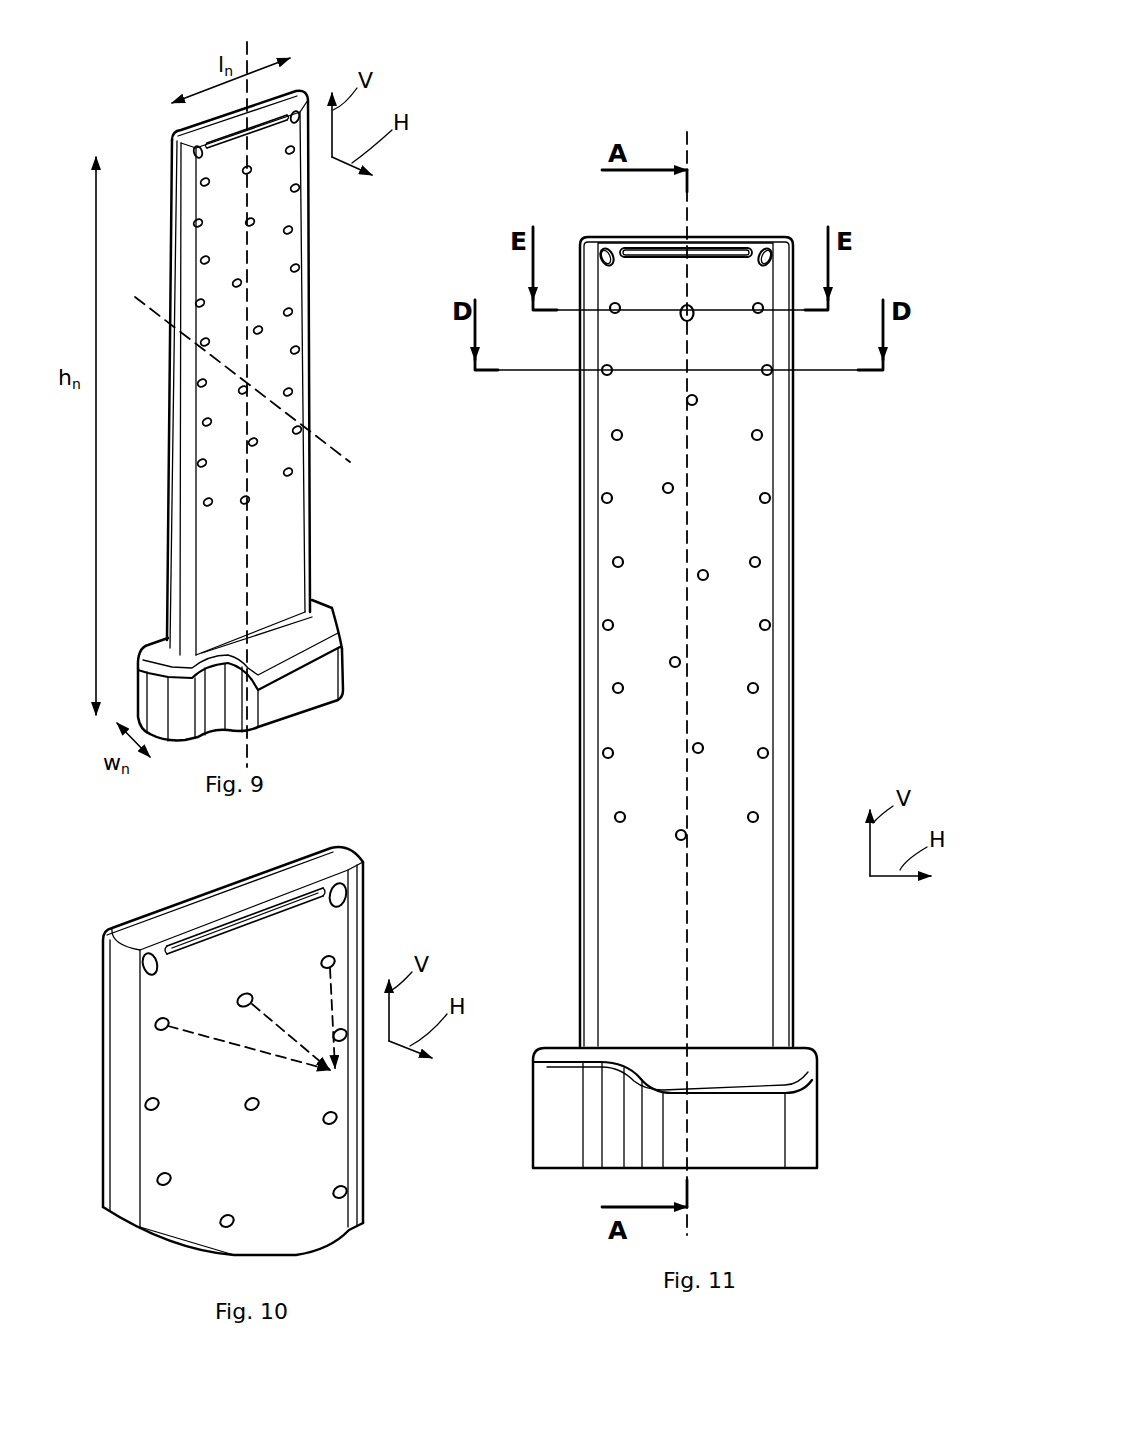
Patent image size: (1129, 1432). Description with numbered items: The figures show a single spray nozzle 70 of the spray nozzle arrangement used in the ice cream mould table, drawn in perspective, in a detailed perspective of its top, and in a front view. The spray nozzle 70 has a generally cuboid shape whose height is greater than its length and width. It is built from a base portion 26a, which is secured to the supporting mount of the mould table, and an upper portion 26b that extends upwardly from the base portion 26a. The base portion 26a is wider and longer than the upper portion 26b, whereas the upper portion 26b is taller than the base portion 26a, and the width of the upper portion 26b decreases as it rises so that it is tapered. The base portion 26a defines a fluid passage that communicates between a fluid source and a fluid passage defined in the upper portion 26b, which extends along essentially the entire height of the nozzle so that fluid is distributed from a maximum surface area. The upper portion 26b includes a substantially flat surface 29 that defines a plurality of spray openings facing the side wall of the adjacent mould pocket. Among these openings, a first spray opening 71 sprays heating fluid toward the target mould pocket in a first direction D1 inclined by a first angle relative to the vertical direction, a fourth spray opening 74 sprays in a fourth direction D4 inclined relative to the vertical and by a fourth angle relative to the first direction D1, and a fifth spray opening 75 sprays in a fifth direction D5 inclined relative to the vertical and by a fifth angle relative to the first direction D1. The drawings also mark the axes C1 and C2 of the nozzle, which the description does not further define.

In FIG. 9, the spray nozzle 70 is at (207, 410).
In FIG. 10, the spray nozzle 70 is at (231, 1084).
In FIG. 11, the spray nozzle 70 is at (682, 669).
In FIG. 9, the base portion 26a is at (293, 680).
In FIG. 11, the base portion 26a is at (770, 1111).
In FIG. 9, the upper portion 26b is at (173, 468).
In FIG. 10, the upper portion 26b is at (194, 1179).
In FIG. 11, the upper portion 26b is at (592, 472).
In FIG. 9, the surface 29 is at (207, 402).
In FIG. 10, the surface 29 is at (158, 997).
In FIG. 11, the surface 29 is at (608, 400).
In FIG. 10, the first spray opening 71 is at (240, 993).
In FIG. 10, the fourth spray opening 74 is at (156, 1028).
In FIG. 10, the fifth spray opening 75 is at (335, 957).
In FIG. 9, the first central axis C1 is at (248, 55).
In FIG. 11, the first central axis C1 is at (688, 155).
In FIG. 9, the second axis C2 is at (323, 440).
In FIG. 10, the first direction D1 is at (330, 1123).
In FIG. 10, the fourth direction D4 is at (271, 1054).
In FIG. 10, the fifth direction D5 is at (353, 1047).